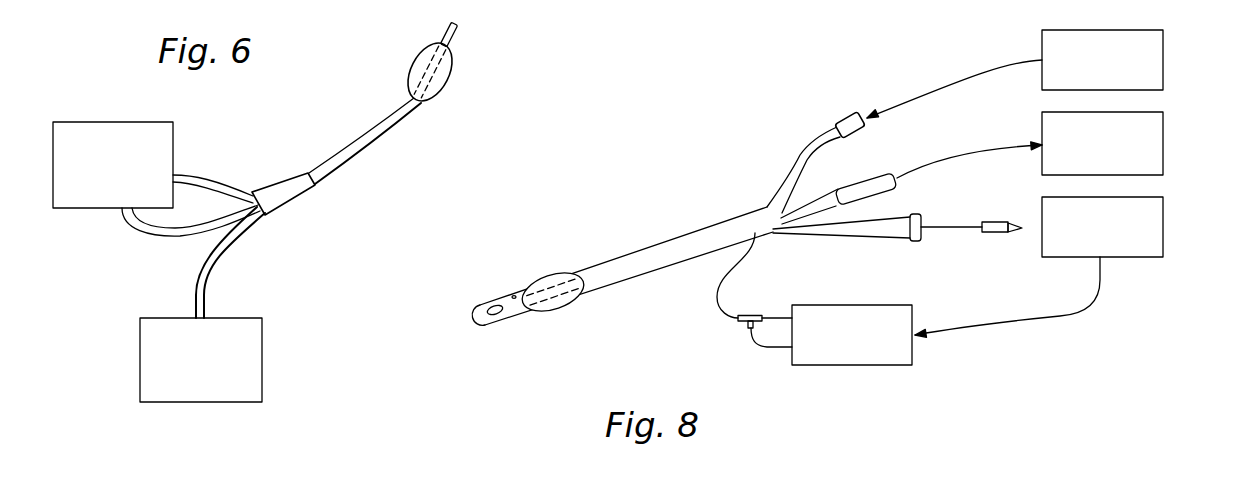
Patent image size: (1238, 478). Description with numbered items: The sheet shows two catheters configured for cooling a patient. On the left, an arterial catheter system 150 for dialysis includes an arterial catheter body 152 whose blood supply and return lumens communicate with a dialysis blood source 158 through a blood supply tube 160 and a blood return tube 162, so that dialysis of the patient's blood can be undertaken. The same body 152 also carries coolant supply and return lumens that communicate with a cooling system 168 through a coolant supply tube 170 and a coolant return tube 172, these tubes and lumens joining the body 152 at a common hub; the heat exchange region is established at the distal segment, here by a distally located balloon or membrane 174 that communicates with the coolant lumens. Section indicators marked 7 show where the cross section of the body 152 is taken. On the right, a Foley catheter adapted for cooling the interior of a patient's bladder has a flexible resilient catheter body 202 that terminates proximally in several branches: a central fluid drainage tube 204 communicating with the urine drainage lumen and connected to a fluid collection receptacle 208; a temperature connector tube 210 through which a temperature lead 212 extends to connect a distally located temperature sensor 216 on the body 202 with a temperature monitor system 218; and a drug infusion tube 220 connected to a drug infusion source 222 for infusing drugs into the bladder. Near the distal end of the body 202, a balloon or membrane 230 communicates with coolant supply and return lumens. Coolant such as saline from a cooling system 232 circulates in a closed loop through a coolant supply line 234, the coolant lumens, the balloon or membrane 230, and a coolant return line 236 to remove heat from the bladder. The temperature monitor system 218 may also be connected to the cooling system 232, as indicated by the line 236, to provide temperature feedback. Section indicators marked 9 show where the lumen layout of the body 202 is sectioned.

In FIG. 6, the arterial catheter system 150 is at (322, 243).
In FIG. 6, the arterial catheter body 152 is at (342, 158).
In FIG. 6, the dialysis blood source 158 is at (100, 121).
In FIG. 6, the blood supply tube 160 is at (196, 172).
In FIG. 6, the blood return tube 162 is at (145, 240).
In FIG. 6, the cooling system 168 is at (140, 357).
In FIG. 6, the coolant supply tube 170 is at (218, 260).
In FIG. 6, the coolant return tube 172 is at (197, 288).
In FIG. 6, the balloon or membrane 174 is at (454, 59).
In FIG. 6, the section line 7- 7 is at (347, 127).
In FIG. 8, the catheter body 202 is at (693, 233).
In FIG. 8, the central fluid drainage tube 204 is at (803, 203).
In FIG. 8, the fluid collection receptacle 208 is at (1163, 142).
In FIG. 8, the temperature connector tube 210 is at (880, 238).
In FIG. 8, the temperature lead 212 is at (948, 231).
In FIG. 8, the temperature sensor 216 is at (513, 296).
In FIG. 8, the temperature monitor system 218 is at (1163, 225).
In FIG. 8, the drug infusion tube 220 is at (820, 135).
In FIG. 8, the drug infusion source 222 is at (1163, 58).
In FIG. 8, the balloon or membrane 230 is at (547, 314).
In FIG. 8, the cooling system 232 is at (853, 367).
In FIG. 8, the coolant supply line 234 is at (777, 316).
In FIG. 8, the coolant return line 236 is at (1030, 322).
In FIG. 8, the section line 9- 9 is at (617, 237).